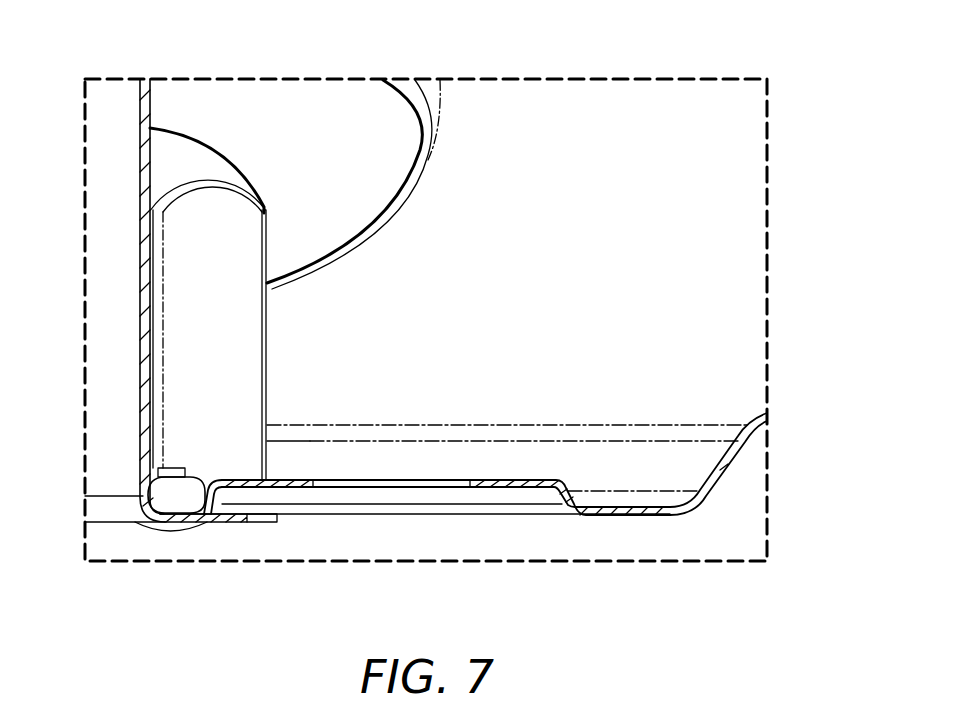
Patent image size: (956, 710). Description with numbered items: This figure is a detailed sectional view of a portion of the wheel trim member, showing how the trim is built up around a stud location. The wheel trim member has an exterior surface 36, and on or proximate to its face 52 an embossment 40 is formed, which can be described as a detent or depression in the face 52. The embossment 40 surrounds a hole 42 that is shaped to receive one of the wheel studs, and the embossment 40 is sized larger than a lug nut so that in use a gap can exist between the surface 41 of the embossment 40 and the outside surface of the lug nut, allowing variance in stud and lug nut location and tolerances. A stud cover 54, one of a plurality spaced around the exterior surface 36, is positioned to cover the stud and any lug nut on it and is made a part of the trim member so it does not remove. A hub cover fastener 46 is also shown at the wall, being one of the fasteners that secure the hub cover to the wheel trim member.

The exterior surface 36 is at (735, 205).
The embossment 40 is at (521, 444).
The surface 41 is at (295, 483).
The hole 42 is at (430, 483).
The hub cover fastener 46 is at (122, 123).
The face 52 is at (652, 507).
The stud cover 54 is at (192, 163).